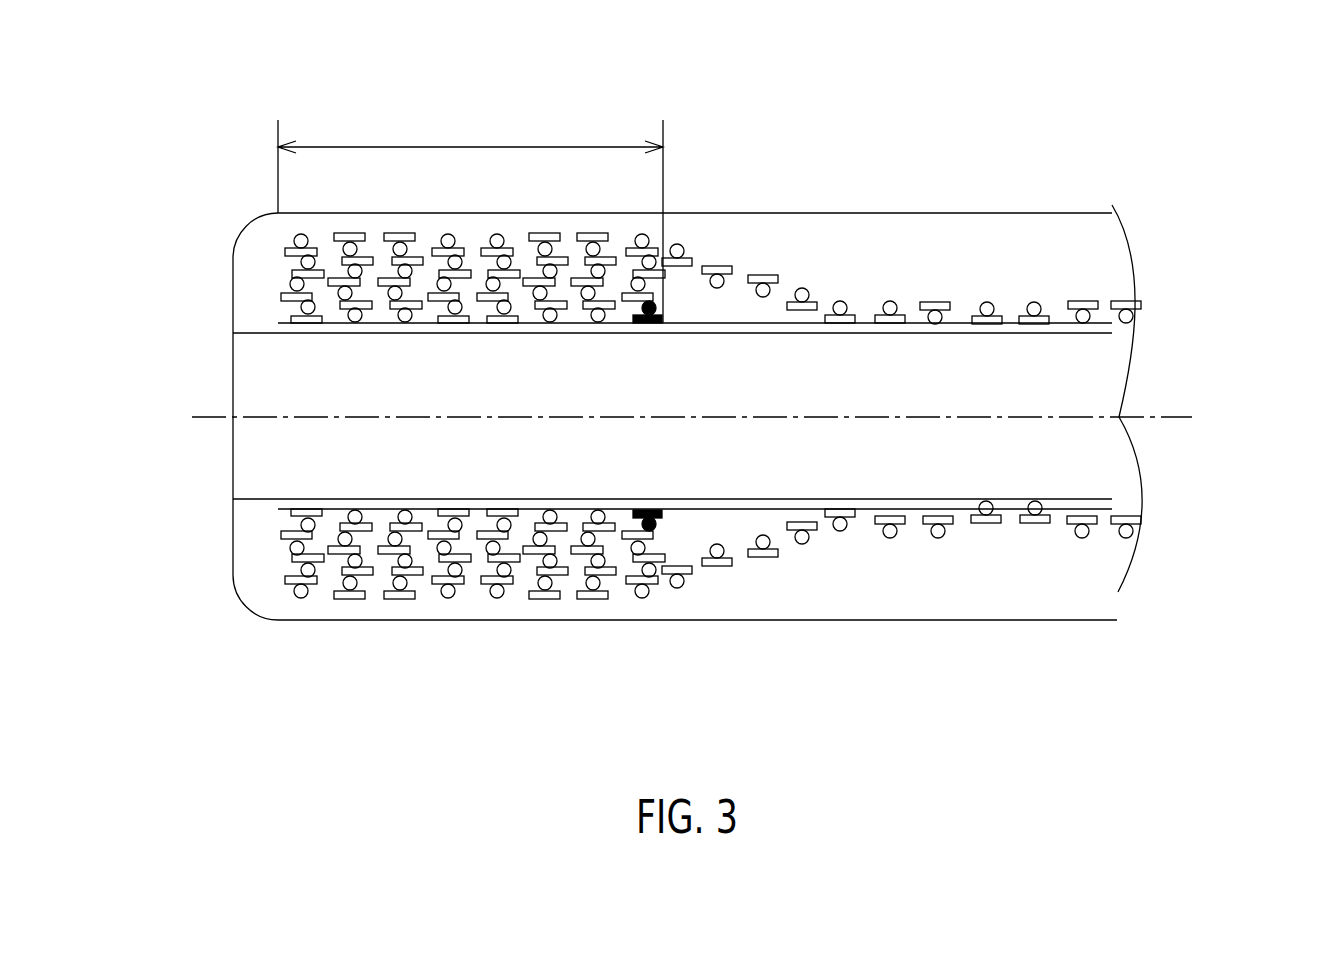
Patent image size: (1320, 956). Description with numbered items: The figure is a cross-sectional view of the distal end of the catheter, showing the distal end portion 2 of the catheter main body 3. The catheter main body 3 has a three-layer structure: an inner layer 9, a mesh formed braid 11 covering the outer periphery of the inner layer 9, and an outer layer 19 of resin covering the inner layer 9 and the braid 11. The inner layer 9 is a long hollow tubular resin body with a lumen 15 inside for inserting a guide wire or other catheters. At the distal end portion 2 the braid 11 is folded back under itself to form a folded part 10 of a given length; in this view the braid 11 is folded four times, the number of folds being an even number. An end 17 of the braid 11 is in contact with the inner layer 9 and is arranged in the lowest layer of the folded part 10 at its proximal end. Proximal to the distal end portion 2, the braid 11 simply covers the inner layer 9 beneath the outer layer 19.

The distal end portion 2 is at (498, 637).
The catheter main body 3 is at (795, 173).
The inner layer 9 is at (1073, 327).
The folded part 10 is at (470, 189).
The braid 11 is at (347, 598).
The lumen 15 is at (327, 438).
The end of the braid 17 is at (653, 325).
The outer layer 19 is at (910, 258).